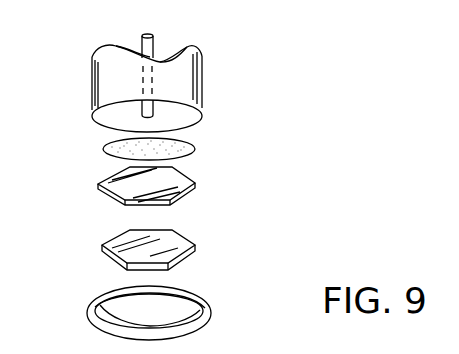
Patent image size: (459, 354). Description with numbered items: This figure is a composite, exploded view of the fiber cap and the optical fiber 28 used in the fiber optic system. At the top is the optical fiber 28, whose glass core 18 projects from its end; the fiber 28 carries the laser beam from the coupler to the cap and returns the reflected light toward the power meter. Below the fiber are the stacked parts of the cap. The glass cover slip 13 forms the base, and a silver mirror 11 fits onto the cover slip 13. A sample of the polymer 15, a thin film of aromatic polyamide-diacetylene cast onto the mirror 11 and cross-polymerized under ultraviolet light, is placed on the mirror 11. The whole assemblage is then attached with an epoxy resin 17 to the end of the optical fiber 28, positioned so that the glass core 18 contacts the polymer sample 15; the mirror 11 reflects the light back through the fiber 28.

The silver mirror 11 is at (193, 192).
The glass cover slip 13 is at (193, 248).
The polymer sample 15 is at (195, 150).
The epoxy resin 17 is at (212, 305).
The glass core 18 is at (153, 43).
The optical fiber 28 is at (202, 98).